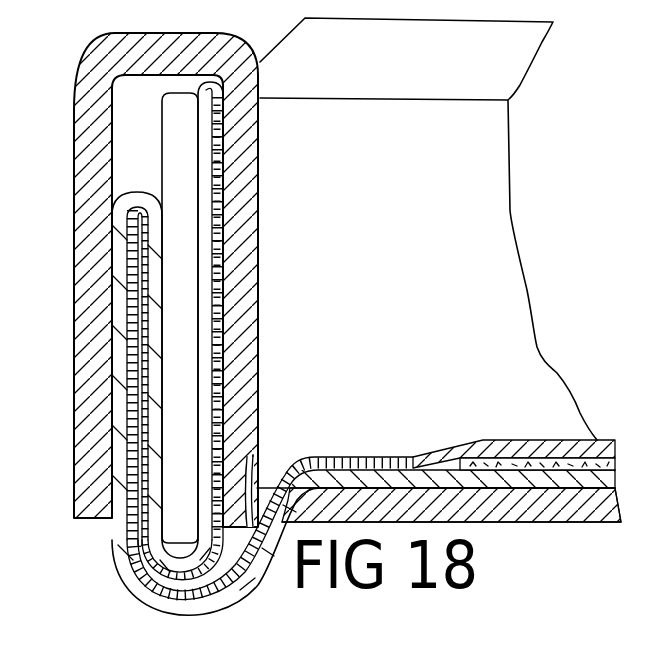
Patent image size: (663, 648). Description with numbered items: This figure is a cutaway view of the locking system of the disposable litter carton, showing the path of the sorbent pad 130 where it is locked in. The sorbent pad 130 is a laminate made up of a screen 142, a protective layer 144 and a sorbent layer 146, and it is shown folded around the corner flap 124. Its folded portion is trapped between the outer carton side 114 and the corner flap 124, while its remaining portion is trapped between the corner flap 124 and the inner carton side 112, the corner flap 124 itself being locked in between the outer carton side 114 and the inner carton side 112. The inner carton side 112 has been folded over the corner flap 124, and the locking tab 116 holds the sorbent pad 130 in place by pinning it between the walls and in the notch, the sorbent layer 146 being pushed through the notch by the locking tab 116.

The inner carton side 112 is at (260, 152).
The outer carton side 114 is at (74, 168).
The locking tab 116 is at (258, 457).
The corner flap 124 is at (172, 130).
The sorbent pad 130 is at (442, 456).
The screen 142 is at (556, 412).
The protective layer 144 is at (598, 440).
The sorbent layer 146 is at (573, 493).